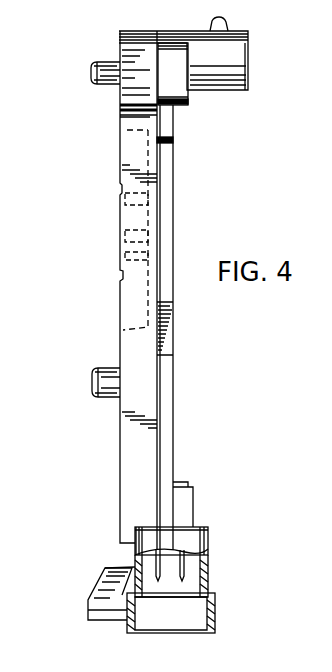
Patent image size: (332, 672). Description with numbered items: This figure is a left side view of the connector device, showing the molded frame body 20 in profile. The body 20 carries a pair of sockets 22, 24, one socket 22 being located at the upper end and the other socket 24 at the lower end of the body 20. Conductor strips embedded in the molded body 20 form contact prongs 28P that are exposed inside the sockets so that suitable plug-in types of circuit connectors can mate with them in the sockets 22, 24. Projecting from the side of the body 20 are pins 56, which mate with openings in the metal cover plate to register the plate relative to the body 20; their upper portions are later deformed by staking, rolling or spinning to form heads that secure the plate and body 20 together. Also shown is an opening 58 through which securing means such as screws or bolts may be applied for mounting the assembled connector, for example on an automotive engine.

The molded frame body 20 is at (118, 452).
The socket 22 is at (198, 31).
The socket 24 is at (217, 617).
The contact prong 28P is at (180, 572).
The pin 56 is at (90, 73).
The opening 58 is at (182, 103).